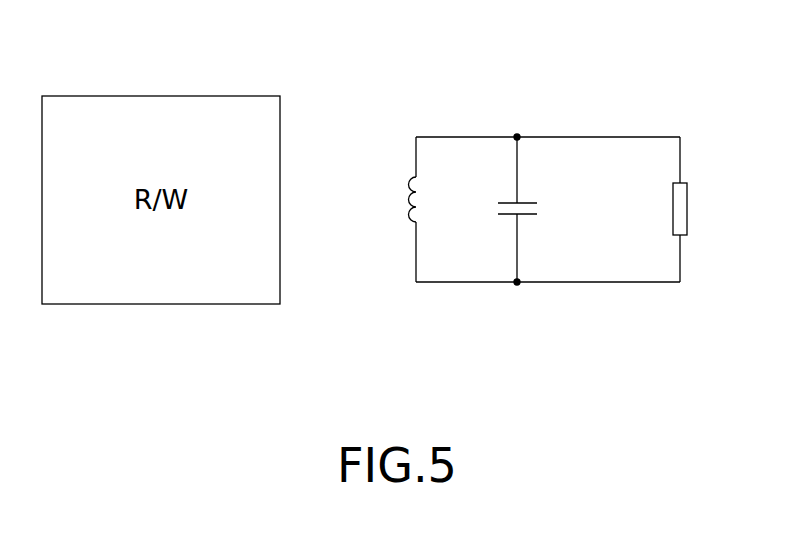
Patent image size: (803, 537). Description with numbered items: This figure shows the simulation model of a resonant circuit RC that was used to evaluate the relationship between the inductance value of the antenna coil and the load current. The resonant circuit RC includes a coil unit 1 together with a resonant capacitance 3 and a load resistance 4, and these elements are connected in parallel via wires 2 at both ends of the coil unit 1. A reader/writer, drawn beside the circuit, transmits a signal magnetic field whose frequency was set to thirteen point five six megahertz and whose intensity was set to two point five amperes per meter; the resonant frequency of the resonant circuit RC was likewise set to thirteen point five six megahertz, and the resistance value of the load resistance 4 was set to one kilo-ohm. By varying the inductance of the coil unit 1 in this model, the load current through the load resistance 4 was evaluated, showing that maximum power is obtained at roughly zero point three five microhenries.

The resonant circuit RC is at (609, 88).
The coil unit 1 is at (400, 187).
The wires 2 is at (453, 137).
The resonant capacitance 3 is at (528, 200).
The load resistance 4 is at (688, 205).